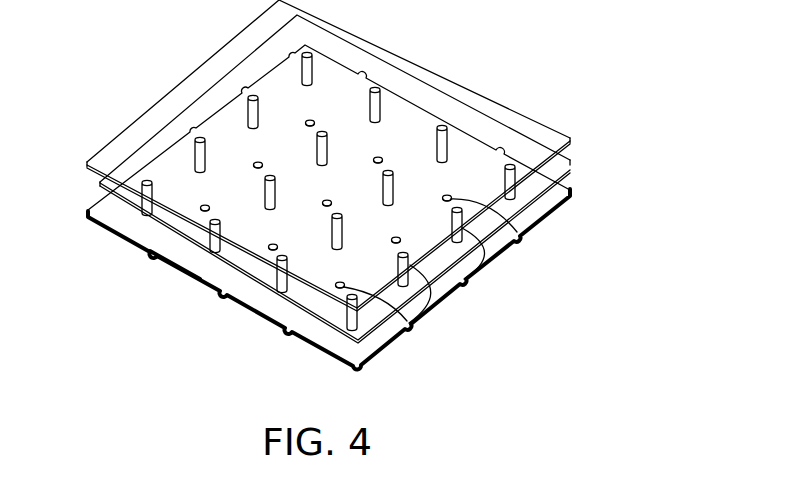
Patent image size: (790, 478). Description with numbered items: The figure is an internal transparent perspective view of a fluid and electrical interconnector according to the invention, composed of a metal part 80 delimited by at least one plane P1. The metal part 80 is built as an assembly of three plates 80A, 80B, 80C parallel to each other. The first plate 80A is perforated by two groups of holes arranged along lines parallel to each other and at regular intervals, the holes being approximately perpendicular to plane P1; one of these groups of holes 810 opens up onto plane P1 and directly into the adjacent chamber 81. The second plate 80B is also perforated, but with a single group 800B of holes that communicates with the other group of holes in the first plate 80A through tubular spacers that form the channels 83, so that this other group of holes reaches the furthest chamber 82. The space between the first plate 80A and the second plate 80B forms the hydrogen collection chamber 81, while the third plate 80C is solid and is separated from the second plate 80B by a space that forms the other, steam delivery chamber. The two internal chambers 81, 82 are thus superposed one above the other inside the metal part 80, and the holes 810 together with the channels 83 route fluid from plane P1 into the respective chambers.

The metal part 80 is at (578, 155).
The first plate 80A is at (100, 212).
The second plate 80B is at (99, 183).
The third plate 80C is at (153, 110).
The group of holes 800B is at (377, 88).
The holes 810 is at (522, 235).
The hydrogen collection chamber 81 is at (280, 311).
The chamber 82 is at (333, 320).
The channels 83 is at (490, 255).
The plane P1 is at (193, 270).